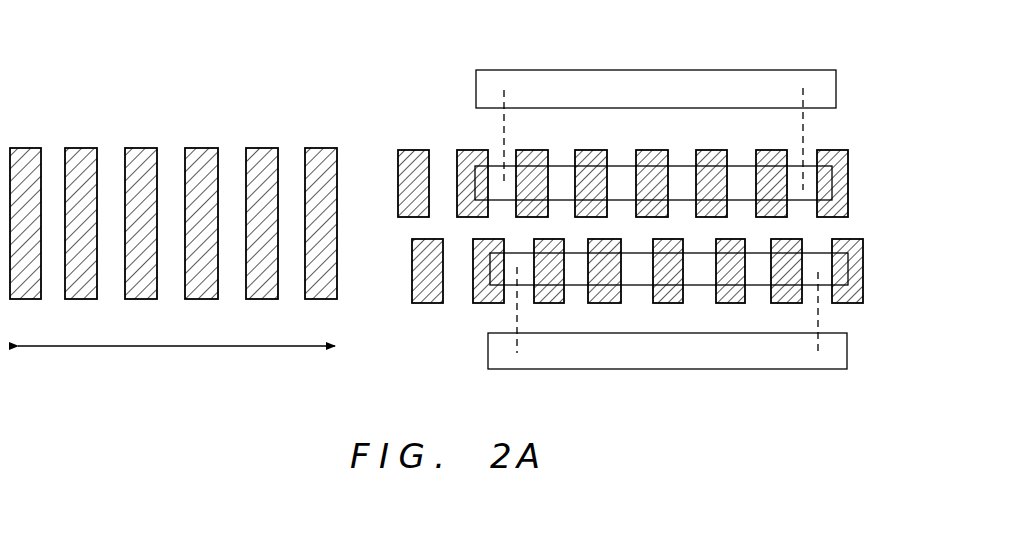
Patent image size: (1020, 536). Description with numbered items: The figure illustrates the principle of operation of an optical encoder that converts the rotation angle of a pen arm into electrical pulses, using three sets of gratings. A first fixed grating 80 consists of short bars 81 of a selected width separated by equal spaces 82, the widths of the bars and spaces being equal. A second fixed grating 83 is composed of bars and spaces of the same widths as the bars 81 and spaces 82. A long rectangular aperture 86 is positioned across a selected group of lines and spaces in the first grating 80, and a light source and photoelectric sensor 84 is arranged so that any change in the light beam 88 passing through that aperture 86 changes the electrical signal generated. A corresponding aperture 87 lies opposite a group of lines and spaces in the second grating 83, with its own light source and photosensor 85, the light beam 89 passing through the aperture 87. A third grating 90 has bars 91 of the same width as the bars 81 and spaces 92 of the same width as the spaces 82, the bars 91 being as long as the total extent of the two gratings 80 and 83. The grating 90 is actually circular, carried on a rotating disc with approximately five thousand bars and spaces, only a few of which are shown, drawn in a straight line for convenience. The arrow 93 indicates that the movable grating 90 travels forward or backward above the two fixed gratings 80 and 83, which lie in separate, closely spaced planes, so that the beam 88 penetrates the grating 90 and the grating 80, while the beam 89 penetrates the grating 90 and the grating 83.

The first grating 80 is at (628, 148).
The bars 81 is at (455, 150).
The spaces 82 is at (741, 150).
The second grating 83 is at (666, 311).
The light source and photoelectric sensor 84 is at (540, 70).
The light source and photosensor 85 is at (647, 369).
The aperture 86 is at (562, 166).
The aperture 87 is at (573, 284).
The light beam 88 is at (506, 146).
The light beam 89 is at (515, 319).
The third grating 90 is at (153, 138).
The bars 91 is at (315, 148).
The spaces 92 is at (113, 148).
The arrow 93 is at (250, 347).